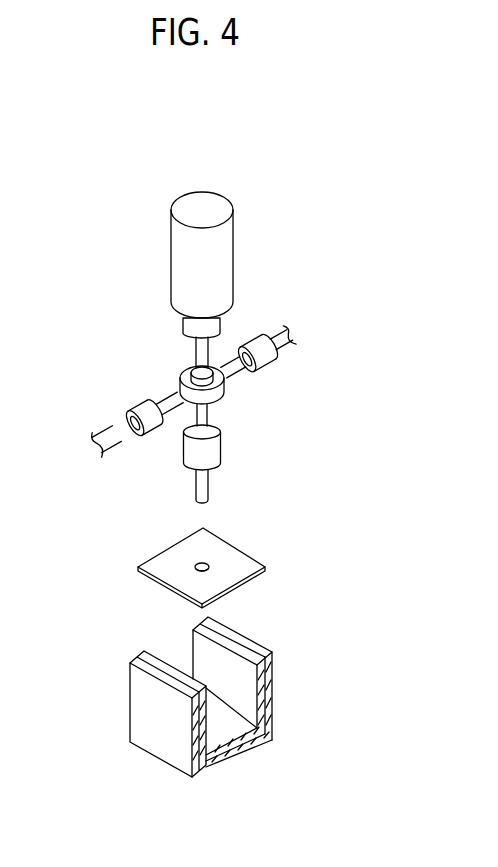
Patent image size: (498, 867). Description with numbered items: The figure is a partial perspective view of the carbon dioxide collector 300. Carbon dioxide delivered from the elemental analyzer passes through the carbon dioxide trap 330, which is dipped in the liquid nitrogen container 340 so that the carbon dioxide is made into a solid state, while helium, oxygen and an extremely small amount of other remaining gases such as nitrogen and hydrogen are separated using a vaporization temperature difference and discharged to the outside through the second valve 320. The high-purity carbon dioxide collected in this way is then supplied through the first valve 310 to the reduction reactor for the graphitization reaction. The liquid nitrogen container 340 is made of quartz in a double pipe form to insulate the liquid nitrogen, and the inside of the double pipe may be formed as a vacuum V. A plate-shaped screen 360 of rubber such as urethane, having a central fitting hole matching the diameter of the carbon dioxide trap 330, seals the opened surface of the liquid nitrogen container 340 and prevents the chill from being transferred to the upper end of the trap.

The carbon dioxide collector 300 is at (87, 226).
The first valve 310 is at (142, 407).
The second valve 320 is at (252, 345).
The carbon dioxide trap 330 is at (193, 489).
The liquid nitrogen container 340 is at (165, 742).
The screen 360 is at (230, 560).
The vacuum V is at (265, 710).